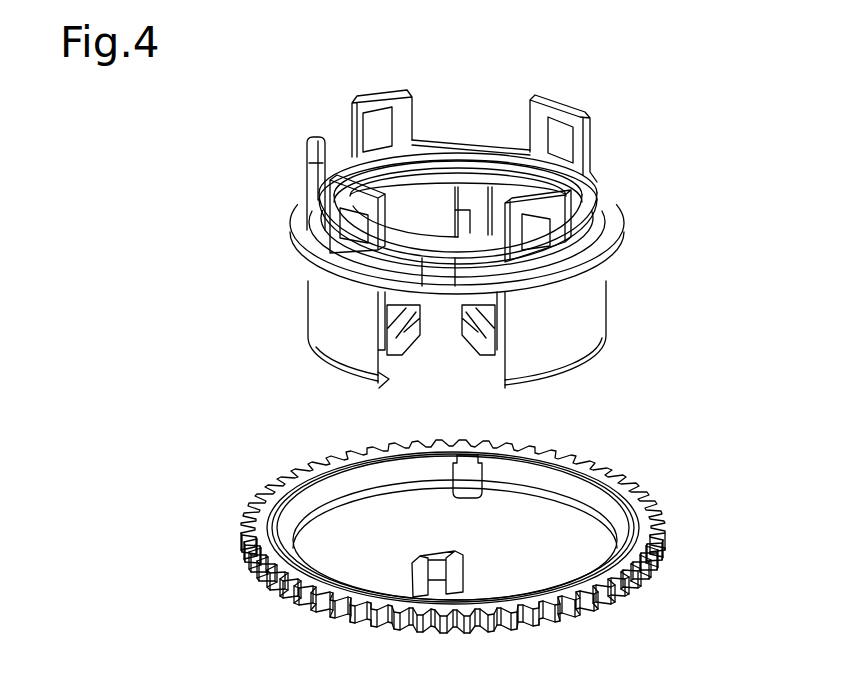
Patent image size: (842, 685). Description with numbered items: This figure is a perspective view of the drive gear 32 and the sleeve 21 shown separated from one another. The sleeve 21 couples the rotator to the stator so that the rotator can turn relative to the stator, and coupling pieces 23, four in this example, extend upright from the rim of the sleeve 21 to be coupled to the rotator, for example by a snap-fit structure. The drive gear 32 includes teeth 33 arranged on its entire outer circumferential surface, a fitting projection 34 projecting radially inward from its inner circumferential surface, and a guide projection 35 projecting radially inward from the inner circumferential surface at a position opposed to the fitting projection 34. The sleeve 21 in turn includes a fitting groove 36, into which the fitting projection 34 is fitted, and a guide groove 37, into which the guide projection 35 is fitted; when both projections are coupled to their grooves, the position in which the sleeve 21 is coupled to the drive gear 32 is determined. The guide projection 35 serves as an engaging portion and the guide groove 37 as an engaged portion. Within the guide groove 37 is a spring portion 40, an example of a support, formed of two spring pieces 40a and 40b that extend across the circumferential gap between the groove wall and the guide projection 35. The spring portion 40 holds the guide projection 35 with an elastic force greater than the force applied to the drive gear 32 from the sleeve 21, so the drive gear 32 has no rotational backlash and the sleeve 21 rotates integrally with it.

The sleeve 21 is at (657, 90).
The coupling pieces 23 is at (383, 93).
The drive gear 32 is at (677, 453).
The teeth 33 is at (664, 533).
The fitting projection 34 is at (465, 487).
The guide projection 35 is at (453, 553).
The fitting groove 36 is at (472, 222).
The guide groove 37 is at (382, 386).
The spring portion 40 is at (490, 393).
The spring piece 40a is at (470, 340).
The spring piece 40b is at (406, 340).